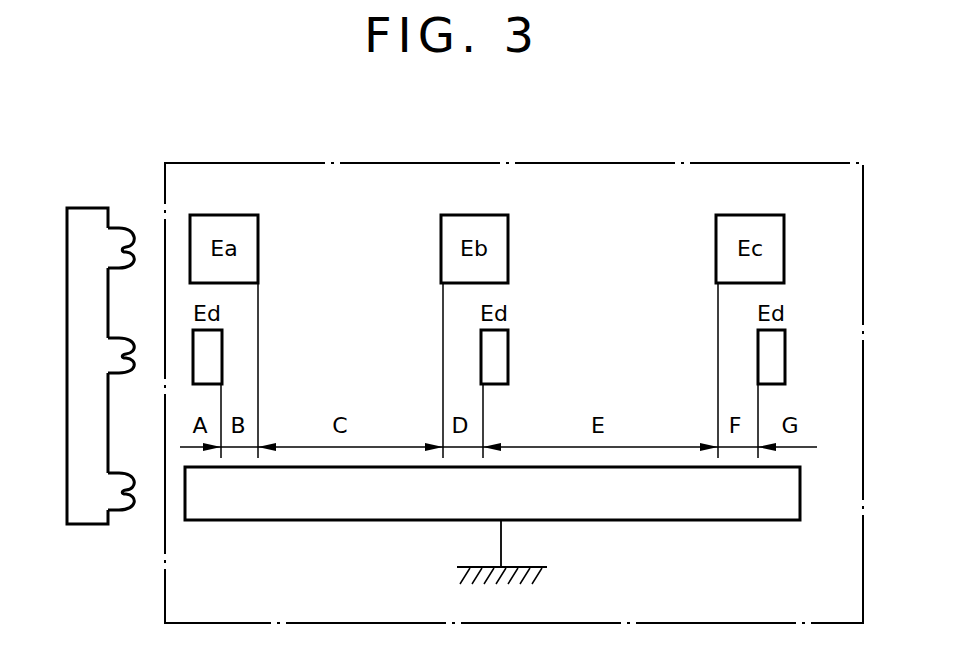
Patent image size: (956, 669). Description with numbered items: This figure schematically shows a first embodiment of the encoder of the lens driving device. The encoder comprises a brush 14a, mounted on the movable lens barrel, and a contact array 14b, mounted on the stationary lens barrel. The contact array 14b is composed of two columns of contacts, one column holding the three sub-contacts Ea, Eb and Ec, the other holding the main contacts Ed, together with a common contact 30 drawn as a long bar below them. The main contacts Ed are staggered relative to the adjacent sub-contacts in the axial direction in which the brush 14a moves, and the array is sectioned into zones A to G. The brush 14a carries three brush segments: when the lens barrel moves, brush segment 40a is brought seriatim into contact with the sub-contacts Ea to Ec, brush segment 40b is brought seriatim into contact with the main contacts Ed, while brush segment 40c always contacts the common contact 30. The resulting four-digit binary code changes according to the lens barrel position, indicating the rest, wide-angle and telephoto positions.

The brush 14a is at (83, 207).
The contact array 14b is at (512, 163).
The brush segment 40a is at (118, 228).
The brush segment 40b is at (118, 338).
The brush segment 40c is at (118, 473).
The common contact 30 is at (313, 520).